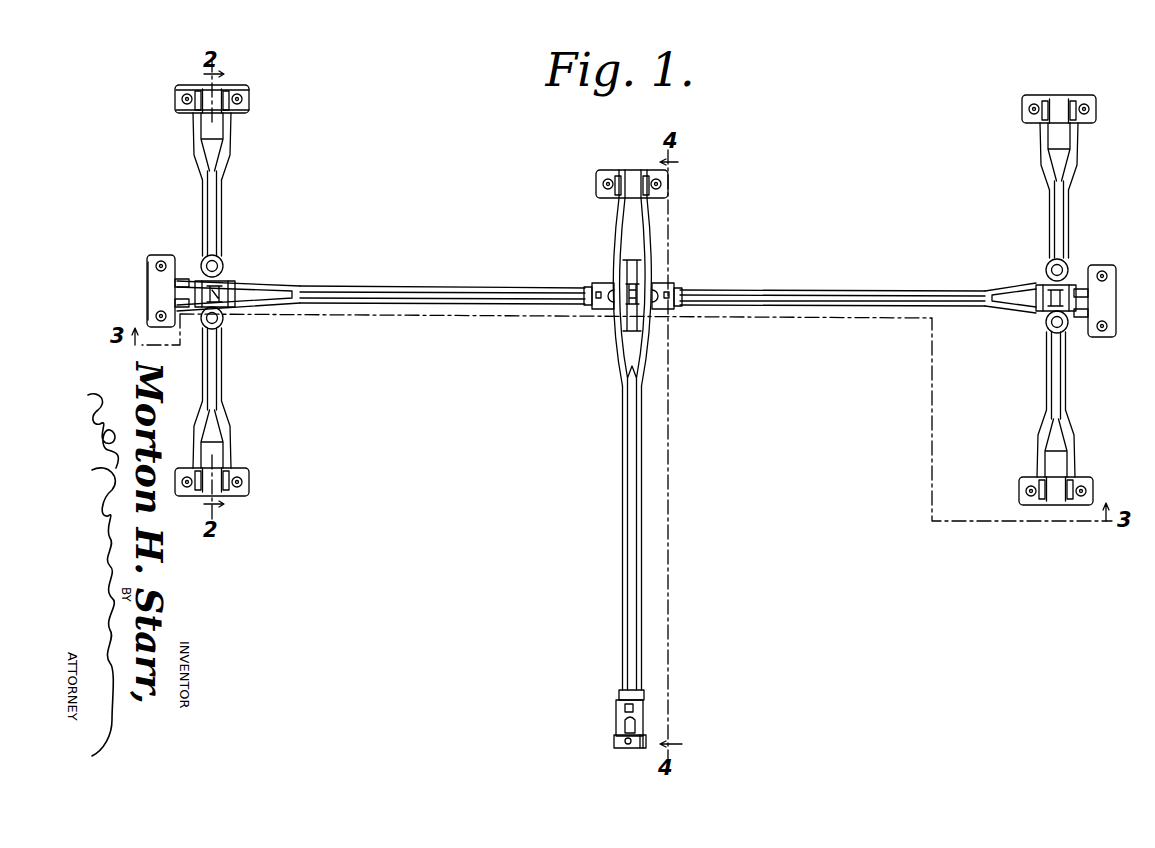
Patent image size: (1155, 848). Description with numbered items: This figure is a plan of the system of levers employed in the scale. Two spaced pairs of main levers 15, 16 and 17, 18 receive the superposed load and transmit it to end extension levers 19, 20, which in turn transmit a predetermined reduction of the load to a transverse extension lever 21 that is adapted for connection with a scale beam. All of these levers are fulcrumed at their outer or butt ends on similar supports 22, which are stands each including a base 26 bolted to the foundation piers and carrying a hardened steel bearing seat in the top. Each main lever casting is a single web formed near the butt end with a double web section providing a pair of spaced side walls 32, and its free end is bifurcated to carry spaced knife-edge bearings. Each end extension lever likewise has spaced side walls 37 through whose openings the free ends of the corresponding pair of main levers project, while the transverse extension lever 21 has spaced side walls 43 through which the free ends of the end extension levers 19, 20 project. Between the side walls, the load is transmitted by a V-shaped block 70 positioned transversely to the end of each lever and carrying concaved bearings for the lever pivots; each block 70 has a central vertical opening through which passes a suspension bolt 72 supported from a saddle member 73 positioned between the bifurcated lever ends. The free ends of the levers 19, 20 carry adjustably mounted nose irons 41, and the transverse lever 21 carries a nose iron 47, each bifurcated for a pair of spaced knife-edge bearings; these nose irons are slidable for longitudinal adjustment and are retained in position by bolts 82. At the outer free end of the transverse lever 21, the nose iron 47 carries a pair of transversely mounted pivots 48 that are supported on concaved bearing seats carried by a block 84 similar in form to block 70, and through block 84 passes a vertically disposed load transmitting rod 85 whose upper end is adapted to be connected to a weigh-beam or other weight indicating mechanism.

The main lever 15 is at (212, 205).
The main lever 16 is at (212, 384).
The main lever 17 is at (1064, 196).
The main lever 18 is at (1050, 392).
The end extension lever 19 is at (418, 288).
The end extension lever 20 is at (812, 280).
The transverse extension lever 21 is at (627, 495).
The support 22 is at (218, 95).
The base 26 is at (176, 92).
The side wall 32 is at (193, 128).
The side wall 37 is at (224, 270).
The nose iron 41 is at (600, 283).
The side wall 43 is at (652, 284).
The nose iron 47 is at (636, 708).
The knife-edge bearing 48 is at (648, 740).
The block 70 is at (240, 286).
The suspension bolt 72 is at (232, 316).
The saddle member 73 is at (200, 282).
The bolt 82 is at (584, 292).
The block 84 is at (620, 745).
The load transmitting rod 85 is at (618, 722).